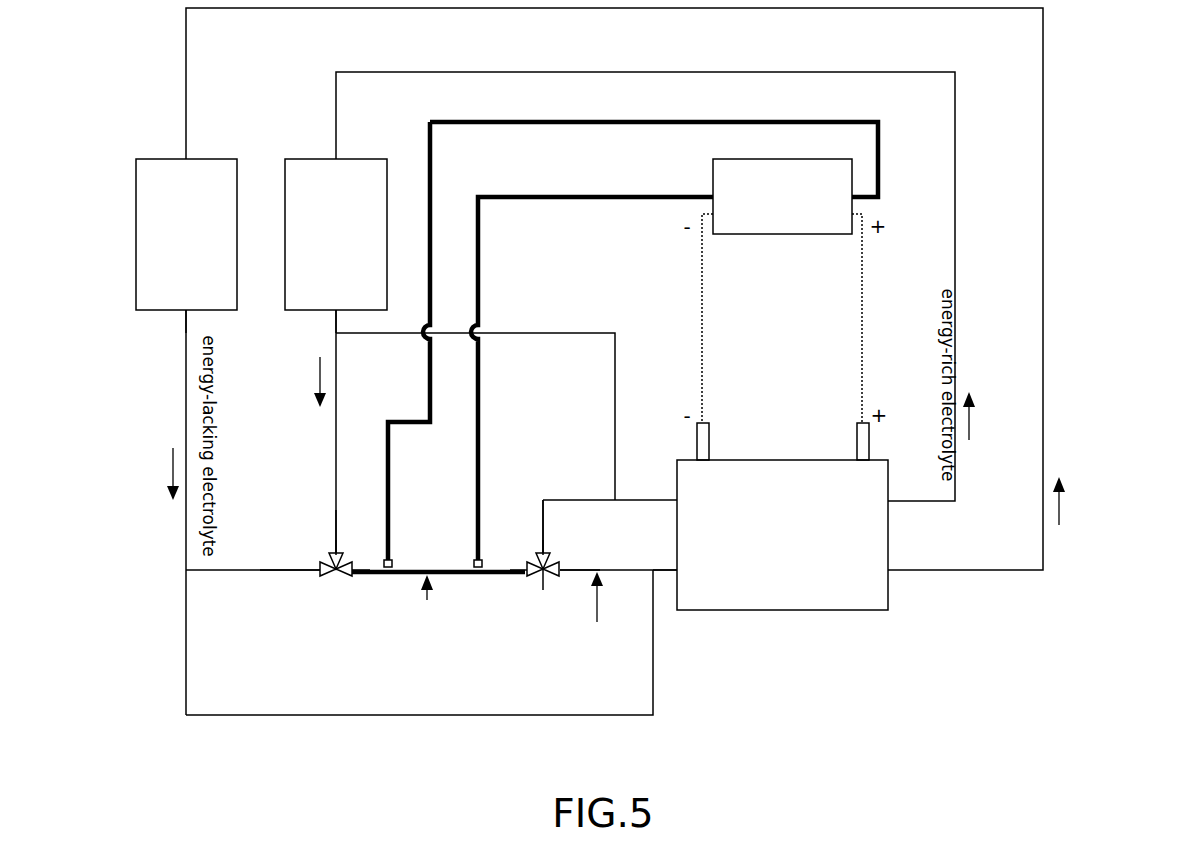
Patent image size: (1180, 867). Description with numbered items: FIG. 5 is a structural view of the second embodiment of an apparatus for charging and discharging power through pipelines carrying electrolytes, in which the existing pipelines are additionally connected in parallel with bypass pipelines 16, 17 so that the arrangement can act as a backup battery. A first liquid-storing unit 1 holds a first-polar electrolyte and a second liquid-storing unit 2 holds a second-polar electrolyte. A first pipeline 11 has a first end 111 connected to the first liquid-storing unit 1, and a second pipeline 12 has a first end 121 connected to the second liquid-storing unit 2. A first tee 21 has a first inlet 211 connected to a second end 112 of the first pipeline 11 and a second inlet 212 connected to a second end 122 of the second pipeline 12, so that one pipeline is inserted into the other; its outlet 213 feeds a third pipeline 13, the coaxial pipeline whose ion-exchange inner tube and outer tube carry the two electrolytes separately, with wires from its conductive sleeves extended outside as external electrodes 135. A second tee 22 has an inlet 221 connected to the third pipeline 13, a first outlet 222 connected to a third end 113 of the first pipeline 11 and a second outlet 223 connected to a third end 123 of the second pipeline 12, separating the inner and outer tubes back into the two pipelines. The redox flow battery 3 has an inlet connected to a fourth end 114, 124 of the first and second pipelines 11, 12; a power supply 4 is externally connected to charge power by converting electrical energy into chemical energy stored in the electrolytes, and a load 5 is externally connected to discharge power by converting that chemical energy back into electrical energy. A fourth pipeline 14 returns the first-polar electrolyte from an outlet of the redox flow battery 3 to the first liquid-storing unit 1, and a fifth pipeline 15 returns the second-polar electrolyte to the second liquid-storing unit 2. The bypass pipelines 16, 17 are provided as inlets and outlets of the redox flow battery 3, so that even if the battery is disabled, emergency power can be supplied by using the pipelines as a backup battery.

The first liquid-storing unit 1 is at (160, 159).
The second liquid-storing unit 2 is at (308, 159).
The redox flow battery (RFB) 3 is at (888, 550).
The power supply 4 is at (783, 234).
The load 5 is at (857, 318).
The first pipeline 11 is at (176, 427).
The second pipeline 12 is at (326, 436).
The third pipeline 13 is at (427, 600).
The fourth pipeline 14 is at (1055, 402).
The fifth pipeline 15 is at (962, 324).
The bypass pipeline 16 is at (186, 668).
The bypass pipeline 17 is at (540, 333).
The first tee 21 is at (336, 580).
The second tee 22 is at (537, 579).
The first end of the first pipeline 111 is at (186, 322).
The second end of the first pipeline 112 is at (283, 570).
The third end of the first pipeline 113 is at (565, 571).
The fourth end of the first pipeline 114 is at (665, 571).
The first end of the second pipeline 121 is at (335, 332).
The second end of the second pipeline 122 is at (334, 555).
The third end of the second pipeline 123 is at (538, 554).
The fourth end of the second pipeline 124 is at (657, 499).
The external electrodes 135 is at (476, 562).
The first inlet of the first tee 211 is at (320, 568).
The second inlet of the first tee 212 is at (342, 559).
The outlet of the first tee 213 is at (343, 580).
The inlet of the second tee 221 is at (527, 568).
The first outlet of the second tee 222 is at (545, 581).
The second outlet of the second tee 223 is at (548, 559).